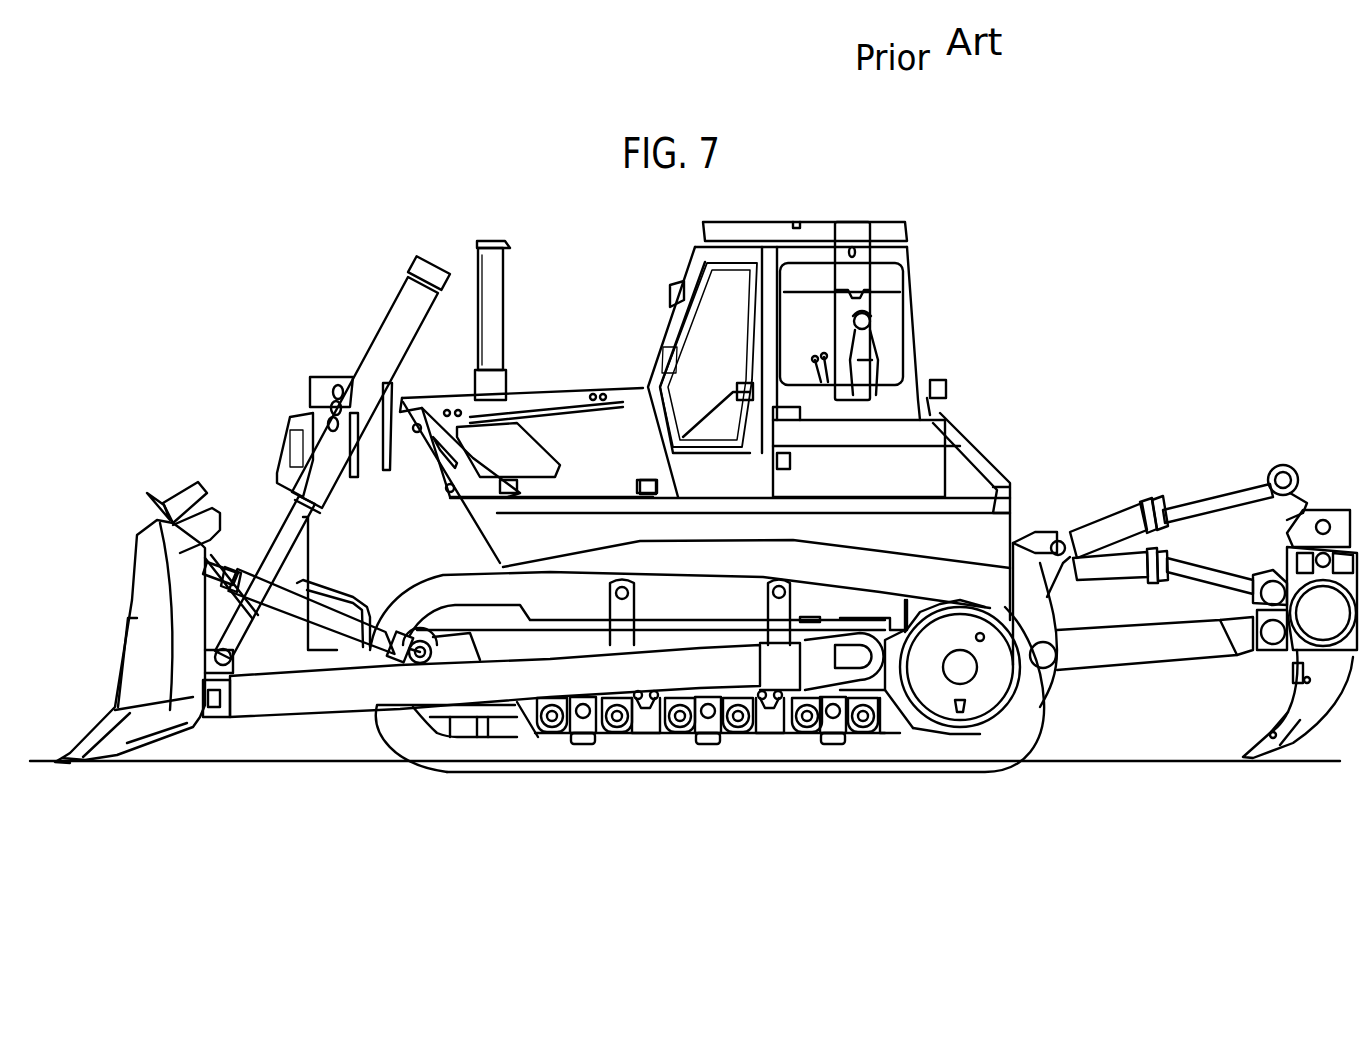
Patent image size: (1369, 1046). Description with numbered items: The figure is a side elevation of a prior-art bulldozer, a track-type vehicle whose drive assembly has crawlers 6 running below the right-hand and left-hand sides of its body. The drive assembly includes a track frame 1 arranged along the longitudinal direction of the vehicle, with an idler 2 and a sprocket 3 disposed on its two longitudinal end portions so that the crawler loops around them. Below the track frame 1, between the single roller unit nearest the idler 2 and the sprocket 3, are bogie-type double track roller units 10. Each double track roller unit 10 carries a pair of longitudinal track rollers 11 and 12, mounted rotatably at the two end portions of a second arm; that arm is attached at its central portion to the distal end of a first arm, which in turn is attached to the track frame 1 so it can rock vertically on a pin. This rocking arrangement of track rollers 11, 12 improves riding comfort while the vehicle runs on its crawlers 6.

The track frame 1 is at (880, 595).
The idler 2 is at (420, 712).
The sprocket 3 is at (935, 740).
The crawler 6 is at (1020, 738).
The double track roller unit 10 is at (583, 748).
The track roller 11 is at (538, 727).
The track roller 12 is at (636, 702).